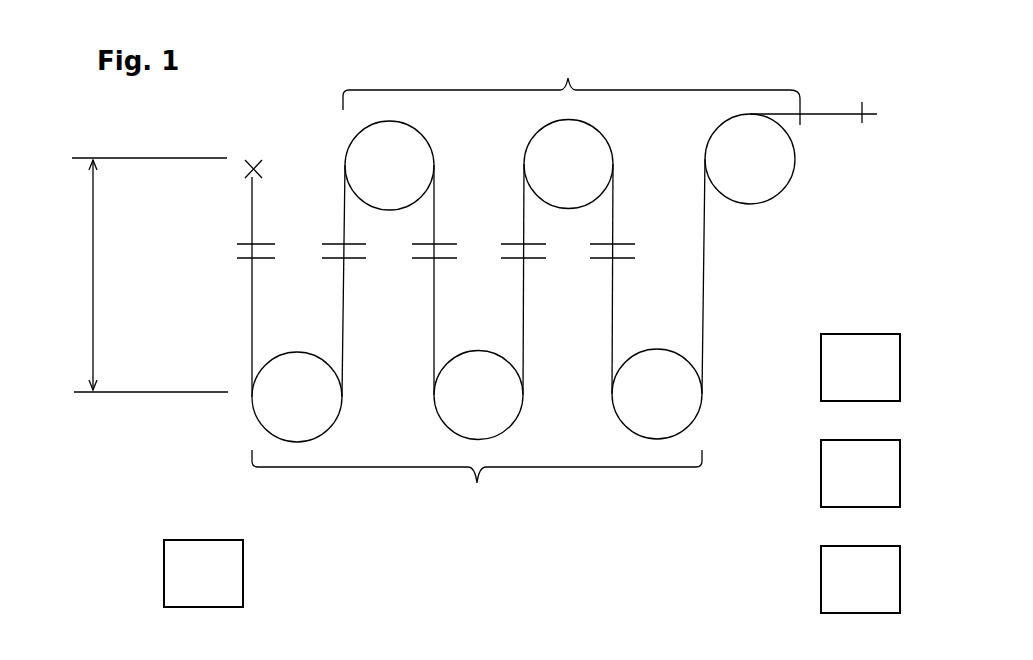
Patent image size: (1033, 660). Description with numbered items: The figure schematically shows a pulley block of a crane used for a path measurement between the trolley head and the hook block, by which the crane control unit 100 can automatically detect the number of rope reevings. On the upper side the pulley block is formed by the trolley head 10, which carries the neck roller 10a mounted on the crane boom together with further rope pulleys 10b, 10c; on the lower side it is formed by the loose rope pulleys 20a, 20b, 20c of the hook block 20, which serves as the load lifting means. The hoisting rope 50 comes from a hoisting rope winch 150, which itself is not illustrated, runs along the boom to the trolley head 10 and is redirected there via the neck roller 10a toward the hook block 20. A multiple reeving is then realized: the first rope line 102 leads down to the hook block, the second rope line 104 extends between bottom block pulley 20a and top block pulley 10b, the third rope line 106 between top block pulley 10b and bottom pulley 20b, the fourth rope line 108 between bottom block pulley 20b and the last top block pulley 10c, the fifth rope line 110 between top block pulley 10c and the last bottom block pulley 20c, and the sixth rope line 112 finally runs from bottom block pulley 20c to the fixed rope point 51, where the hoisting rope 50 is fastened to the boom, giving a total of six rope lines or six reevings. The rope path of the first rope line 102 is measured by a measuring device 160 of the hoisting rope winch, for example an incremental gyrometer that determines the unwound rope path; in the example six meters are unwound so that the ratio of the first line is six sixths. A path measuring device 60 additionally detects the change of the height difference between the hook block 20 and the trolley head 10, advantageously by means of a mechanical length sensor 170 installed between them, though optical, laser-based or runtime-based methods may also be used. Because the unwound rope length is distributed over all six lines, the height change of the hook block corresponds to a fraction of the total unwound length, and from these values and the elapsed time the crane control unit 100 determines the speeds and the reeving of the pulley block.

The trolley head 10 is at (571, 79).
The neck roller 10a is at (787, 165).
The rope pulley 10b is at (603, 155).
The rope pulley 10c is at (417, 166).
The hook block 20 is at (477, 484).
The rope pulley 20a is at (669, 408).
The rope pulley 20b is at (508, 403).
The rope pulley 20c is at (321, 405).
The hoisting rope 50 is at (872, 117).
The fixed rope point 51 is at (256, 160).
The path measuring device 60 is at (61, 248).
The crane control unit 100 is at (223, 583).
The first rope line 102 is at (707, 325).
The second rope line 104 is at (615, 325).
The third rope line 106 is at (526, 325).
The fourth rope line 108 is at (436, 325).
The fifth rope line 110 is at (347, 325).
The sixth rope line 112 is at (255, 325).
The hoisting rope winch 150 is at (880, 375).
The measuring device 160 is at (880, 481).
The mechanical length sensor 170 is at (880, 588).